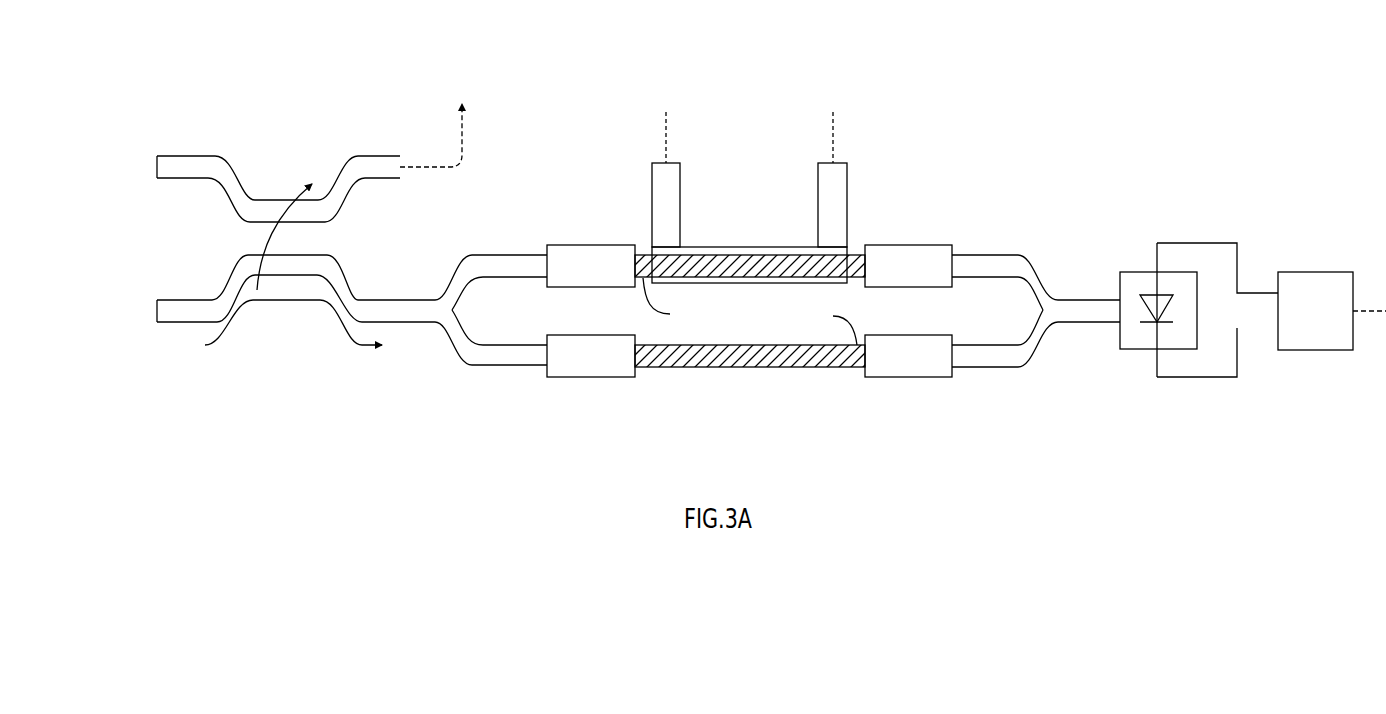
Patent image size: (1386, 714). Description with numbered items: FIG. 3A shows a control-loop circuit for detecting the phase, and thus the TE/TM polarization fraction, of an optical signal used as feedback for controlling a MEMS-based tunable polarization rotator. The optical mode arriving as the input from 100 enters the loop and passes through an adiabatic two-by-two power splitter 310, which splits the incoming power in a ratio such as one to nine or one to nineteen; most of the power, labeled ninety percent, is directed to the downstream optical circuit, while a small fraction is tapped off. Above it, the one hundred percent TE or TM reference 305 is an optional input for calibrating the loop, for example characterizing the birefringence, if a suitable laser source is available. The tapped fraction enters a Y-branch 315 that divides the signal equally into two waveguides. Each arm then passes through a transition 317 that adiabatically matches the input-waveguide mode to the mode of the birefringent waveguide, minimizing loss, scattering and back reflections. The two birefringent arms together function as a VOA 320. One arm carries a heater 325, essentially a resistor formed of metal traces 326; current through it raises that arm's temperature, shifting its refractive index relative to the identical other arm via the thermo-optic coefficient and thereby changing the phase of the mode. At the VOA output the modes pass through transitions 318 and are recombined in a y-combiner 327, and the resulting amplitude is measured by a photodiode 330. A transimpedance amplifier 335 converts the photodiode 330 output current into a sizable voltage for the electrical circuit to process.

The input from upstream optical component 100 is at (117, 316).
The 100% TE/100% TM reference 305 is at (187, 156).
The power splitter 310 is at (268, 320).
The Y-branch 315 is at (443, 337).
The transition 317 is at (585, 245).
The transition 318 is at (892, 245).
The VOA (variable optical attenuator) 320 is at (737, 338).
The heater 325 is at (750, 246).
The metal traces 326 is at (818, 170).
The y-combiner 327 is at (1078, 300).
The photodiode 330 is at (1132, 350).
The transimpedance amplifier (TIA) 335 is at (1295, 272).